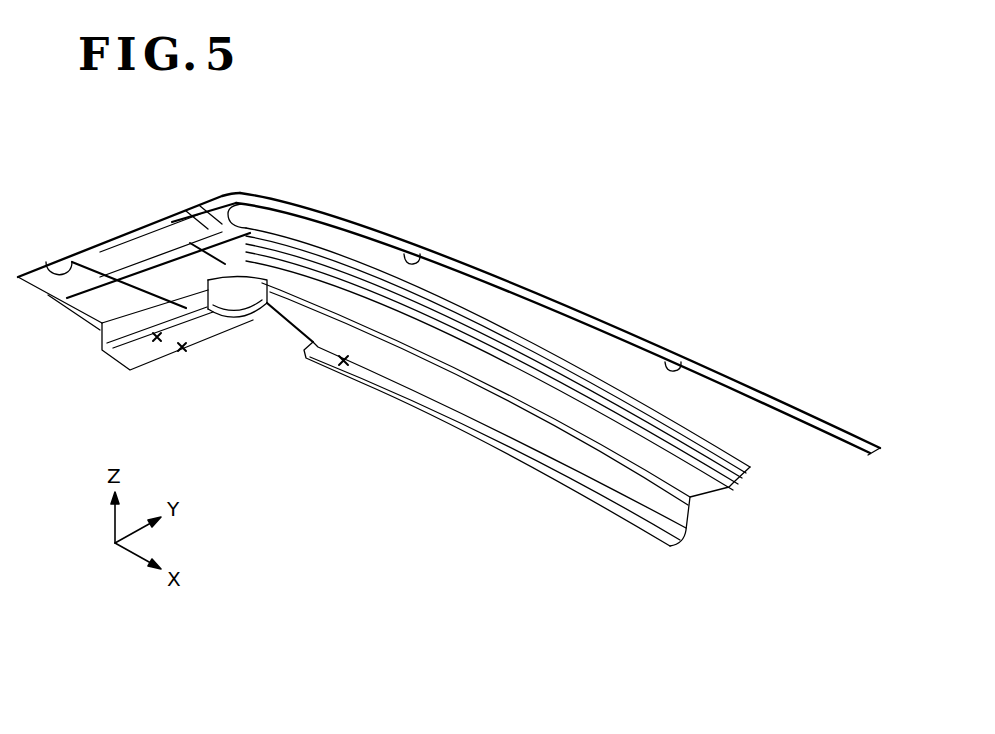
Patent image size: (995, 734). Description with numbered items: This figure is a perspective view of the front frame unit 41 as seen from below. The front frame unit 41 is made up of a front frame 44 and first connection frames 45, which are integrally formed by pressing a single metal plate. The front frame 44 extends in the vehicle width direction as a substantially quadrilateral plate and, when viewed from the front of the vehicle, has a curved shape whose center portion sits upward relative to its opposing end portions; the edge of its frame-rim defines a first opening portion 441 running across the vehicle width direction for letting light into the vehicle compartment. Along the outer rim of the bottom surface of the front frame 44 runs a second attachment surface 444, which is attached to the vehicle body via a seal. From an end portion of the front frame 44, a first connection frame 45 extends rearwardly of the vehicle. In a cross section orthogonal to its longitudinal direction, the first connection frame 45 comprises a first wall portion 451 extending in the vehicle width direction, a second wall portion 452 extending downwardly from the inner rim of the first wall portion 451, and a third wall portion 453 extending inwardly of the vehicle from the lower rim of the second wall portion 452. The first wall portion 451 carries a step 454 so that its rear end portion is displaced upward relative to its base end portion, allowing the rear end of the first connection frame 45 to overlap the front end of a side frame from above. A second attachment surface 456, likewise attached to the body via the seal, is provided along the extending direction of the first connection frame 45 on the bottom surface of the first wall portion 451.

The front frame unit 41 is at (753, 188).
The front frame 44 is at (554, 368).
The first opening portion 441 is at (664, 358).
The second attachment surface 444 is at (408, 254).
The first connection frame 45 is at (142, 284).
The first wall portion 451 is at (80, 298).
The second wall portion 452 is at (113, 335).
The third wall portion 453 is at (219, 327).
The step 454 is at (52, 258).
The second attachment surface 456 is at (122, 246).